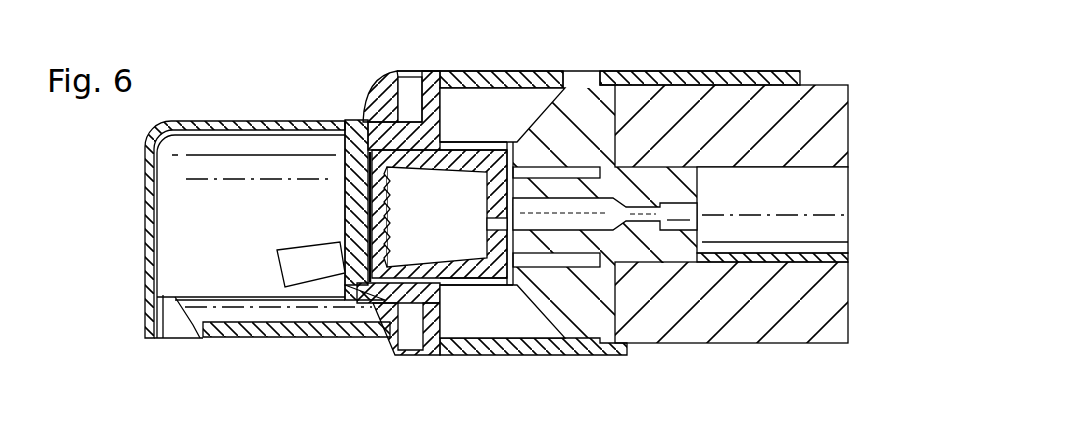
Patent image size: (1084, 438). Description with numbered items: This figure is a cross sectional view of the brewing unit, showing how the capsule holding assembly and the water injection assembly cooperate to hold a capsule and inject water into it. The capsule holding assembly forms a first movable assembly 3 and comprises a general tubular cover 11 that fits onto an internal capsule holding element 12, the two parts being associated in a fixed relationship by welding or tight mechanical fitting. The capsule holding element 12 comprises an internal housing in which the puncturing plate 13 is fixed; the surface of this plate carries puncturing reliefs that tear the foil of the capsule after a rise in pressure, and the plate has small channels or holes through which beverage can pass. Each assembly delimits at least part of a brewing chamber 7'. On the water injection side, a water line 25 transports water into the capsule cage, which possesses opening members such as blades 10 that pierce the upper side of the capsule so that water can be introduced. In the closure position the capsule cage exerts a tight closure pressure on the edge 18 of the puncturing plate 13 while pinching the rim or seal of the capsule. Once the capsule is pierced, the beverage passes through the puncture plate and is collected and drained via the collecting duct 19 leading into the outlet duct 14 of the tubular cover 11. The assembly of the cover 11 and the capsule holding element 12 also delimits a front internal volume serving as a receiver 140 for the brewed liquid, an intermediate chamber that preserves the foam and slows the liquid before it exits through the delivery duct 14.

The first movable assembly 3 is at (303, 121).
The receiver 140 is at (172, 237).
The beverage outlet 14 is at (170, 342).
The edge of the puncturing plate 18 is at (395, 300).
The puncturing plate 13 is at (364, 121).
The capsule holding element 12 is at (424, 88).
The tubular cover 11 is at (529, 71).
The water line 25 is at (600, 222).
The blades 10 is at (493, 224).
The brewing chamber 7' is at (410, 217).
The collecting duct 19 is at (313, 262).